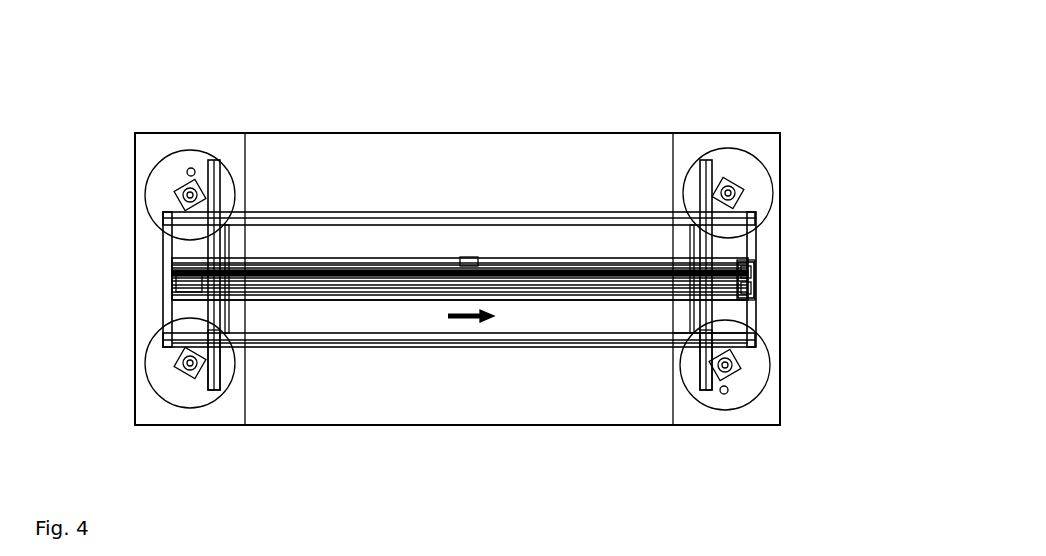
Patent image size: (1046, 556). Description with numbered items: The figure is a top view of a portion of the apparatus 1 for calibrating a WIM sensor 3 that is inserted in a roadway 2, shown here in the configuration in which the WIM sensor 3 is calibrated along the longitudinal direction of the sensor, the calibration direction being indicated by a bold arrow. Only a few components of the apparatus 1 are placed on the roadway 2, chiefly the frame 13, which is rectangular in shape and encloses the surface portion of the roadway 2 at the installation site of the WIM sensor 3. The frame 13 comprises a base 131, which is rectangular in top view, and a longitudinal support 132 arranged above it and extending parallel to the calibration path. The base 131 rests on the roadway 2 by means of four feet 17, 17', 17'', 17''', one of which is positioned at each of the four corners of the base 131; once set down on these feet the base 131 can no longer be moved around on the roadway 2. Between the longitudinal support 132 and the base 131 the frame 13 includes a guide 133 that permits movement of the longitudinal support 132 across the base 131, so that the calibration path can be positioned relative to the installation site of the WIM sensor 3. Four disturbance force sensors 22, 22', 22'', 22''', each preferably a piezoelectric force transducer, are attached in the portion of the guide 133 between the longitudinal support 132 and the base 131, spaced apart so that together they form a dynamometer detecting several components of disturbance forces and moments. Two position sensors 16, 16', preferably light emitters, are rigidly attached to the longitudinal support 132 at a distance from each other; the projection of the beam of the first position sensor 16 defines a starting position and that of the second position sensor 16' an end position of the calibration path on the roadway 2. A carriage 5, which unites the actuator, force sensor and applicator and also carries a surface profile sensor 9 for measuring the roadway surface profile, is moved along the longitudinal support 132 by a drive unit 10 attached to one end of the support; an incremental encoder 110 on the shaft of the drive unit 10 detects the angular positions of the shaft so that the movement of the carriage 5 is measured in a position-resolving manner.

The apparatus 1 is at (607, 84).
The roadway 2 is at (481, 388).
The WIM sensor 3 is at (583, 302).
The carriage 5 is at (547, 74).
The surface profile sensor 9 is at (467, 254).
The drive unit 10 is at (755, 280).
The incremental encoder 110 is at (746, 280).
The frame 13 is at (557, 502).
The base 131 is at (352, 337).
The longitudinal support 132 is at (387, 283).
The guide 133 is at (670, 342).
The first position sensor 16 is at (663, 242).
The second position sensor 16' is at (270, 241).
The foot 17 is at (775, 365).
The foot 17' is at (779, 201).
The foot 17'' is at (133, 180).
The foot 17''' is at (126, 348).
The disturbance force sensor 22 is at (674, 419).
The disturbance force sensor 22' is at (730, 218).
The disturbance force sensor 22'' is at (248, 218).
The disturbance force sensor 22''' is at (190, 419).